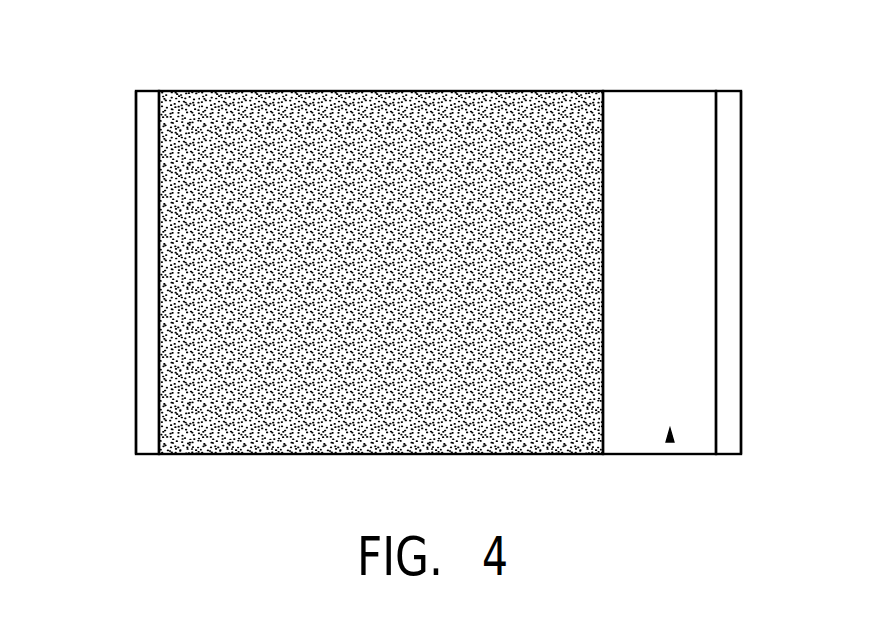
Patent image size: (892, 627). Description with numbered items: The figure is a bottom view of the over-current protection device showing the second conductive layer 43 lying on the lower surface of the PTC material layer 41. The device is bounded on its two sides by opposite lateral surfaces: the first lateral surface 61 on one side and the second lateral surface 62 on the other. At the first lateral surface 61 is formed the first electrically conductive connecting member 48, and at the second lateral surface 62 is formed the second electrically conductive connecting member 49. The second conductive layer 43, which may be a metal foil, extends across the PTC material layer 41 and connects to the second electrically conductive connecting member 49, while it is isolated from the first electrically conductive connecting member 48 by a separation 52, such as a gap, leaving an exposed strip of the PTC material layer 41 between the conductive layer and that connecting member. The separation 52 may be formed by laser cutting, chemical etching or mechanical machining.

The PTC material layer 41 is at (664, 106).
The second conductive layer 43 is at (371, 110).
The first electrically conductive connecting member 48 is at (728, 231).
The second electrically conductive connecting member 49 is at (143, 229).
The separation 52 is at (670, 442).
The first lateral surface 61 is at (741, 303).
The second lateral surface 62 is at (136, 300).